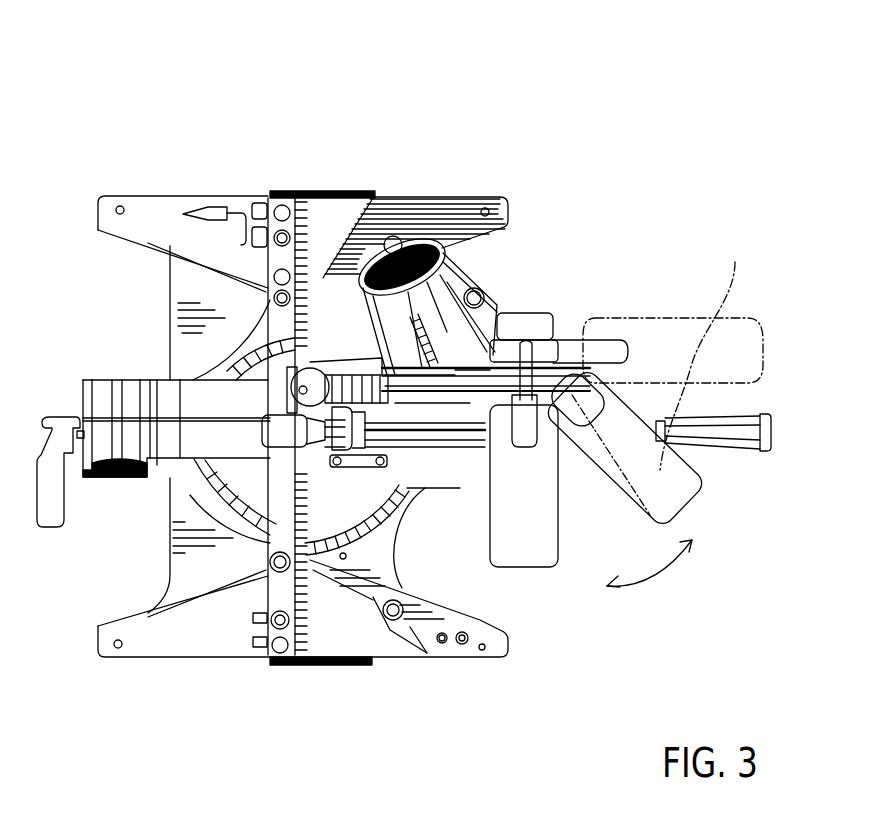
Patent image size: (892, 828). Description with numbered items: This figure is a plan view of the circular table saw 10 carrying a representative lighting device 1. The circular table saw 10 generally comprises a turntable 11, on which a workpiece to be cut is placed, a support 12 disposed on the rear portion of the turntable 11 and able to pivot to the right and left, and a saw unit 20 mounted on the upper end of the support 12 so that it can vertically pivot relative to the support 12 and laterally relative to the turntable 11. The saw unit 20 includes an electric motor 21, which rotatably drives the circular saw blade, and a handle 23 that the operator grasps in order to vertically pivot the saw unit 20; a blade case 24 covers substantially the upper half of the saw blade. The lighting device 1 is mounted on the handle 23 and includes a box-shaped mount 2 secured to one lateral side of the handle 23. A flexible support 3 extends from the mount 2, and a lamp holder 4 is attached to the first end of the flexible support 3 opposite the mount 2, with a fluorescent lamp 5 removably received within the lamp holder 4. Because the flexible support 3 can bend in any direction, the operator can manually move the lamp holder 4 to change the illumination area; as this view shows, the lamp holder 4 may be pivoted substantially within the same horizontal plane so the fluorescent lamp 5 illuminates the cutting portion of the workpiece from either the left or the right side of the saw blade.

The lighting device 1 is at (572, 302).
The mount 2 is at (520, 310).
The flexible support 3 is at (494, 342).
The lamp holder 4 is at (556, 557).
The fluorescent lamp 5 is at (687, 333).
The circular table saw 10 is at (376, 172).
The turntable 11 is at (175, 480).
The support 12 is at (167, 402).
The saw unit 20 is at (562, 286).
The electric motor 21 is at (463, 335).
The handle 23 is at (472, 373).
The blade case 24 is at (437, 430).